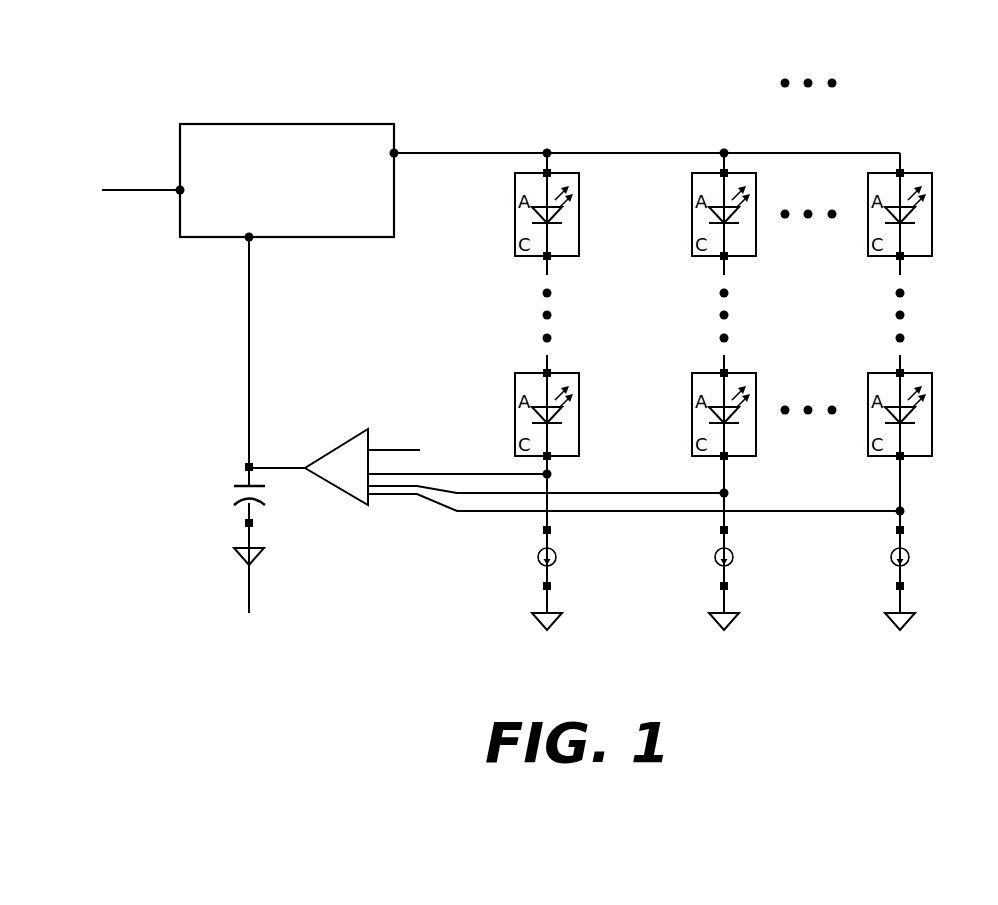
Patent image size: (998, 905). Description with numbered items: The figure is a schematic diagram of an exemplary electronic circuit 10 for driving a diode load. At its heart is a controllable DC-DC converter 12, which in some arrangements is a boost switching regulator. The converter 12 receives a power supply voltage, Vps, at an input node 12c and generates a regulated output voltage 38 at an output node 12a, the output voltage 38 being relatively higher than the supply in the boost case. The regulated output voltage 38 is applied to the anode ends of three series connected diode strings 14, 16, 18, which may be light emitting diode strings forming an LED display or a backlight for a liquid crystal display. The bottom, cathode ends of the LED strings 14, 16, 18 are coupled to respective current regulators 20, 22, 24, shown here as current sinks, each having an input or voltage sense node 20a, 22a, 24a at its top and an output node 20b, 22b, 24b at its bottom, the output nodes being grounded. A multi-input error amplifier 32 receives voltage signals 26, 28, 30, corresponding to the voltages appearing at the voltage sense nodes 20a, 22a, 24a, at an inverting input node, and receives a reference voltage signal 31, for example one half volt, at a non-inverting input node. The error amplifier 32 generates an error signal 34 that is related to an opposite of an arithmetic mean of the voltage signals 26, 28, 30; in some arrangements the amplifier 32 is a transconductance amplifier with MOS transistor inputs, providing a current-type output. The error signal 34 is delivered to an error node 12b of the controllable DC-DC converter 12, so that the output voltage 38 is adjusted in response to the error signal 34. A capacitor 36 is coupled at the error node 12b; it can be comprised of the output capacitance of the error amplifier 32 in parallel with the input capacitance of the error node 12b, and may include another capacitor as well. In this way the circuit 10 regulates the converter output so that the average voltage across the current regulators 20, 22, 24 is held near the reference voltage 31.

The electronic circuit 10 is at (508, 58).
The controllable DC-DC converter 12 is at (382, 229).
The output node 12a is at (396, 151).
The error node 12b is at (252, 240).
The input node 12c is at (178, 192).
The series connected diode string 14 is at (565, 258).
The series connected diode string 16 is at (742, 258).
The series connected diode string 18 is at (918, 258).
The current regulator 20 is at (555, 553).
The voltage sense node 20a is at (543, 530).
The output node 20b is at (543, 586).
The current regulator 22 is at (732, 553).
The voltage sense node 22a is at (720, 530).
The output node 22b is at (720, 586).
The current regulator 24 is at (908, 553).
The voltage sense node 24a is at (896, 530).
The output node 24b is at (896, 586).
The voltage signal 26 is at (490, 474).
The voltage signal 28 is at (636, 493).
The voltage signal 30 is at (807, 511).
The reference voltage signal 31 is at (385, 450).
The multi-input error amplifier 32 is at (338, 488).
The error signal 34 is at (250, 380).
The capacitor 36 is at (240, 492).
The regulated output voltage 38 is at (632, 153).